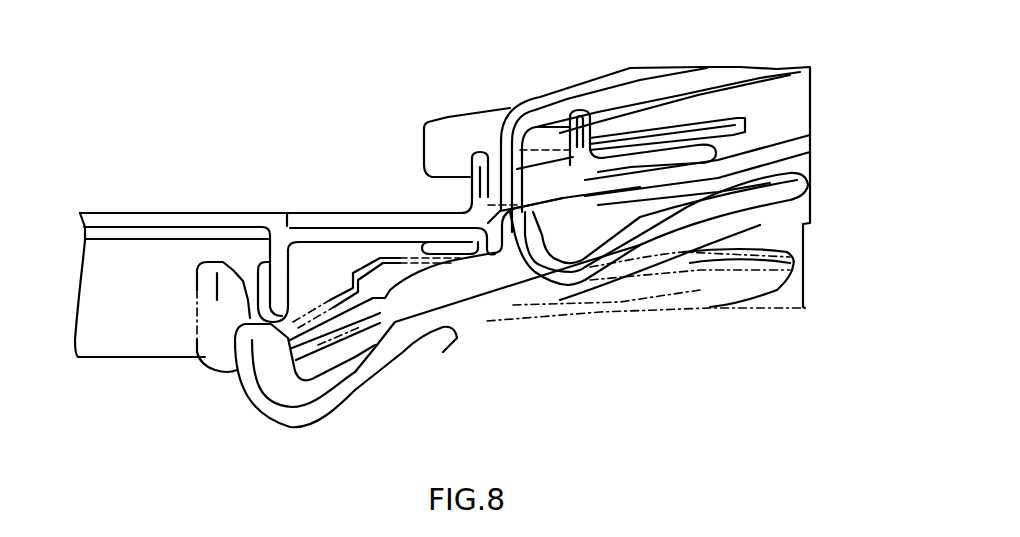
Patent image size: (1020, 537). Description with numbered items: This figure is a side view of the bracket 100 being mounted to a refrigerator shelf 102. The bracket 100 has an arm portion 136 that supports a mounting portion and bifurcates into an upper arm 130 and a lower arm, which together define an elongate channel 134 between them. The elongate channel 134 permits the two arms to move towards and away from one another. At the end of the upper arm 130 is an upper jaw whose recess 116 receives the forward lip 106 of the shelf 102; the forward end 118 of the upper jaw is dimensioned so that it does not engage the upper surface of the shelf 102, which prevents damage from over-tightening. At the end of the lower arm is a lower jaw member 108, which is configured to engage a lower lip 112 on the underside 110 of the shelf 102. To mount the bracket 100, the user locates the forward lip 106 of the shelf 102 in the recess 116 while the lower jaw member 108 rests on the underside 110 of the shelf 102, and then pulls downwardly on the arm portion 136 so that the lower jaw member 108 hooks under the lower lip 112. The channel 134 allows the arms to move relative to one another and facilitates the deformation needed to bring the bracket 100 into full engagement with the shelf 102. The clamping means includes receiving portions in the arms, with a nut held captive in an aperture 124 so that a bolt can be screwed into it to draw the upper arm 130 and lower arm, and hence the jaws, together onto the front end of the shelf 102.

The bracket 100 is at (457, 87).
The shelf 102 is at (153, 218).
The forward lip 106 is at (470, 193).
The lower jaw member 108 is at (309, 412).
The underside 110 is at (185, 232).
The lower lip 112 is at (282, 277).
The recess 116 is at (483, 167).
The forward end 118 is at (432, 177).
The aperture 124 is at (550, 142).
The upper arm 130 is at (427, 123).
The elongate channel 134 is at (645, 168).
The arm portion 136 is at (795, 102).